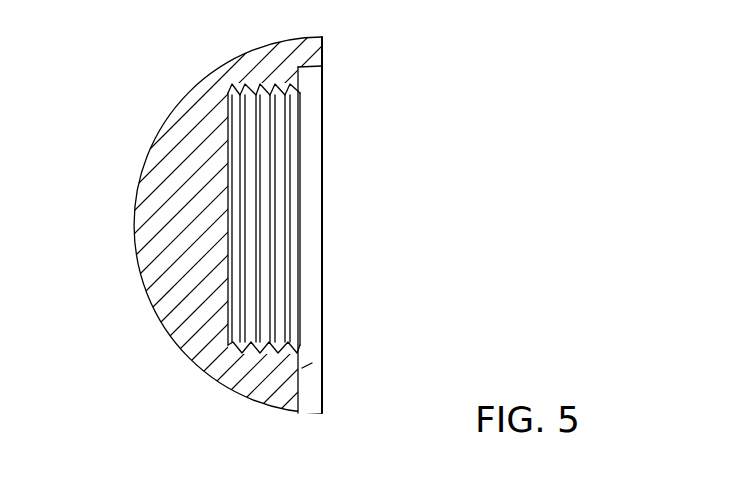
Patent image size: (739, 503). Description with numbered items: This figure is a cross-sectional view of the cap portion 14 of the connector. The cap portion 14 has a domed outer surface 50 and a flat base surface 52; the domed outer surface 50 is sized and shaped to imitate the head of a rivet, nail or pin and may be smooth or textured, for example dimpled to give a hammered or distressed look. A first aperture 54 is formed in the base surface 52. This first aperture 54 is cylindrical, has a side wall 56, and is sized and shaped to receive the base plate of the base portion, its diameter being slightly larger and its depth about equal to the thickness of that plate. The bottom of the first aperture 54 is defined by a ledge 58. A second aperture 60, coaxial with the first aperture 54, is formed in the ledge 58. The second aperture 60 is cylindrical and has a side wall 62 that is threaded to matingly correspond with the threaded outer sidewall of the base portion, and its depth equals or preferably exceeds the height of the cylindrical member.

The cap portion 14 is at (485, 313).
The domed outer surface 50 is at (157, 308).
The flat base surface 52 is at (322, 50).
The first aperture 54 is at (322, 126).
The side wall 56 is at (322, 72).
The ledge 58 is at (312, 363).
The second aperture 60 is at (286, 238).
The side wall 62 is at (255, 90).